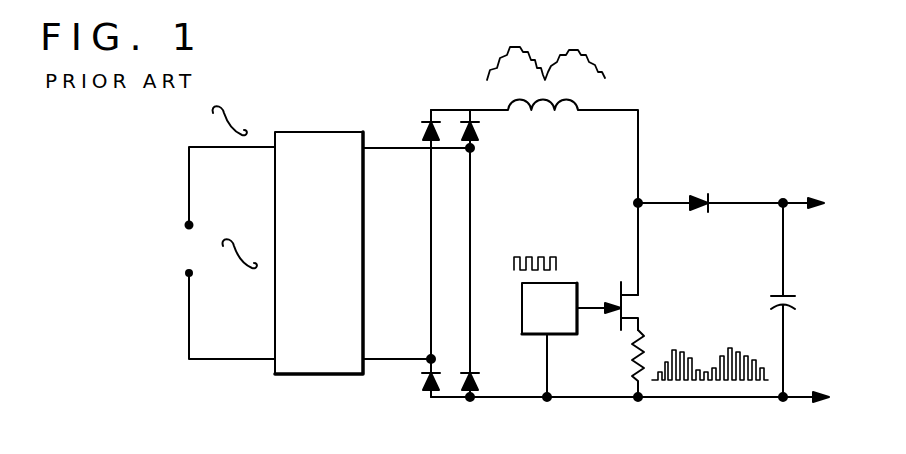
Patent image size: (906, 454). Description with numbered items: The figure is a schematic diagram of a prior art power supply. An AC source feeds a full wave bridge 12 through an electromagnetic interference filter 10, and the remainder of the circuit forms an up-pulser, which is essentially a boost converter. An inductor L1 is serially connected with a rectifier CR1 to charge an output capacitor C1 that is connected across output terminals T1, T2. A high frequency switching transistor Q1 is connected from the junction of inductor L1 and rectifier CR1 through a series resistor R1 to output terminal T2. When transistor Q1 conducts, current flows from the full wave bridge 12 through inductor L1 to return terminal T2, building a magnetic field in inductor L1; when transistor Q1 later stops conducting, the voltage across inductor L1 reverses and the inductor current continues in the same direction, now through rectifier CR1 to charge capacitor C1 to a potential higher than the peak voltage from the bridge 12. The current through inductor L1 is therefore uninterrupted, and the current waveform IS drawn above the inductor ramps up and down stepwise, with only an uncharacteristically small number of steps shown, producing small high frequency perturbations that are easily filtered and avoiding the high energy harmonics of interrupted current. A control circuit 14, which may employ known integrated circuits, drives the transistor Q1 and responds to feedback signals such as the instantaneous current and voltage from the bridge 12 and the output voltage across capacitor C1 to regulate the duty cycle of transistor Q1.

The electromagnetic interference filter 10 is at (298, 374).
The full wave bridge 12 is at (459, 280).
The control circuit 14 is at (540, 334).
The inductor L1 is at (562, 112).
The rectifier CR1 is at (720, 172).
The high frequency switching transistor Q1 is at (638, 305).
The series resistor R1 is at (633, 353).
The output capacitor C1 is at (818, 302).
The output terminal T1 is at (810, 187).
The output terminal T2 is at (630, 414).
The current waveform IS is at (557, 31).